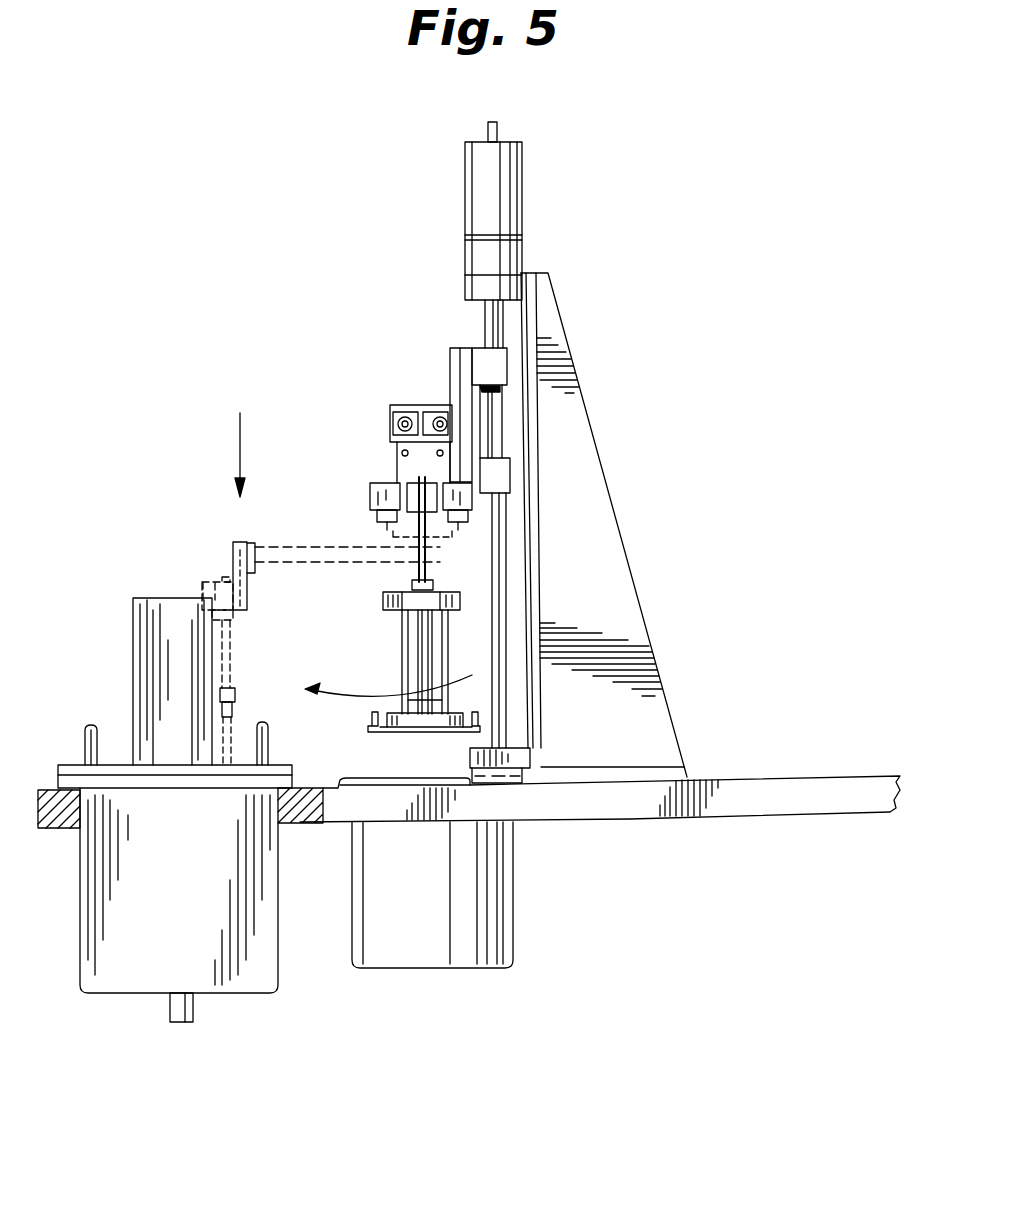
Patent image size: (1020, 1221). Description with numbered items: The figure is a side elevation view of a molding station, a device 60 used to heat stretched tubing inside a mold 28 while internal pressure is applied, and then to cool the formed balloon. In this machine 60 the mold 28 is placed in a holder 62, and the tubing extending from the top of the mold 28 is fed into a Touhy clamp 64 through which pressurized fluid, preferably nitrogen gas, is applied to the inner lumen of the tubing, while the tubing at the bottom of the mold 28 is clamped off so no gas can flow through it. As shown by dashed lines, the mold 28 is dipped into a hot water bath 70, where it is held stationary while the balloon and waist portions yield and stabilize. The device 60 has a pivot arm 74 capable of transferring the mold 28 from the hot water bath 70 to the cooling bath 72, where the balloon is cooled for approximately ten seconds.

The device 60 is at (335, 228).
The Touhy clamp 64 is at (370, 492).
The pivot arm 74 is at (317, 547).
The holder 62 is at (383, 596).
The mold 28 is at (402, 663).
The water bath 70 is at (233, 980).
The cooling bath 72 is at (420, 953).